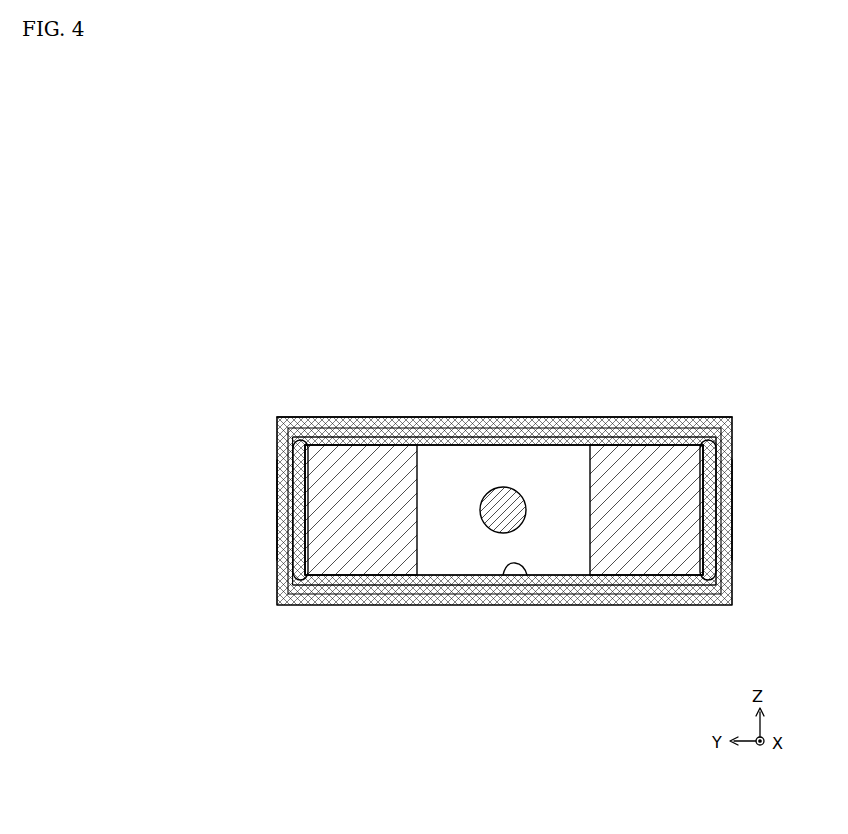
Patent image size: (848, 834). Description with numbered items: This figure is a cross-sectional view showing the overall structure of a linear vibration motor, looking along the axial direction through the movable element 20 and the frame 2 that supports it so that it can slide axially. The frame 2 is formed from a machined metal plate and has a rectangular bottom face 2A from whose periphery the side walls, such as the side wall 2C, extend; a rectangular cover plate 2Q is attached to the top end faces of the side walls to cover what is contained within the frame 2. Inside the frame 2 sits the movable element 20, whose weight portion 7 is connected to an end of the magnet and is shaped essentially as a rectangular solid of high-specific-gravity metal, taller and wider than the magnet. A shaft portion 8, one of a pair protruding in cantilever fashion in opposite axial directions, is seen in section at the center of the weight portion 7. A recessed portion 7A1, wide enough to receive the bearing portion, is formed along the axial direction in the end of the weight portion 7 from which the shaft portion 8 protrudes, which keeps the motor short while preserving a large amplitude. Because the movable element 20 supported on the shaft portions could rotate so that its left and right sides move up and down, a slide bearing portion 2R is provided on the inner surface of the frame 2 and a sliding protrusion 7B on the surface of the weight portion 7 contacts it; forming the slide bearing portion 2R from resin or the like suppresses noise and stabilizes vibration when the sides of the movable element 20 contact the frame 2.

The frame 2 is at (280, 606).
The cover plate 2Q is at (672, 420).
The side wall 2C is at (277, 500).
The slide bearing portion 2R is at (285, 437).
The bottom face 2A is at (504, 576).
The weight portion 7 is at (504, 474).
The movable element 20 is at (378, 440).
The recessed portion 7A1 is at (453, 455).
The sliding protrusion 7B is at (320, 437).
The shaft portion 8 is at (505, 487).